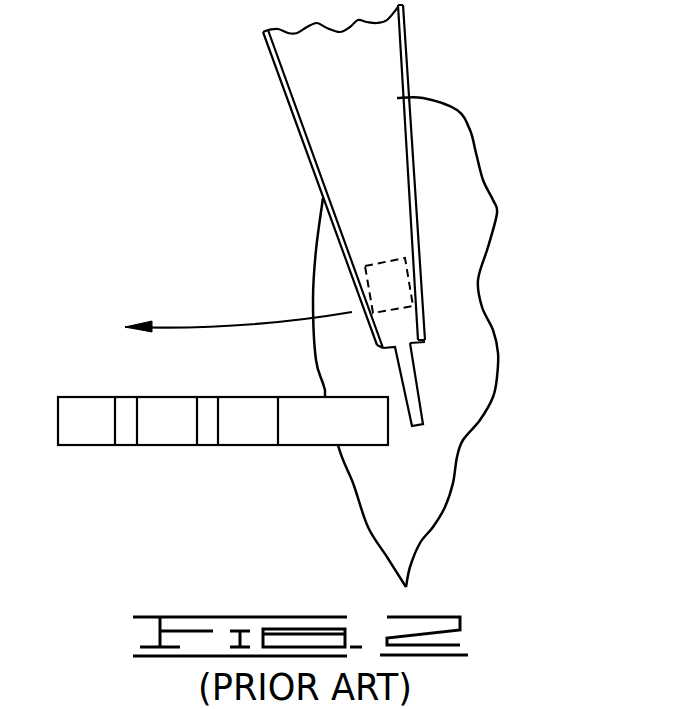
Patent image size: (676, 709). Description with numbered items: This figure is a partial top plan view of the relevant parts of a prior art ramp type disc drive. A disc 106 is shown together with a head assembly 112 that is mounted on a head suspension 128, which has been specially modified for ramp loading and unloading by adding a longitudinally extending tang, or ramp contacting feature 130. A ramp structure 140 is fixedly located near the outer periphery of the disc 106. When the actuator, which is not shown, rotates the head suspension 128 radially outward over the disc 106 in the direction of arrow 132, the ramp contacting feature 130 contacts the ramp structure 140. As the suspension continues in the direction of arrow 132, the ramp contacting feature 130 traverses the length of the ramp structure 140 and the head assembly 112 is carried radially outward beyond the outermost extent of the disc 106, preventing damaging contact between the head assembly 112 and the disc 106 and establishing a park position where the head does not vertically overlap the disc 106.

The head suspension 128 is at (375, 115).
The head assembly 112 is at (398, 271).
The ramp contacting feature 130 is at (412, 392).
The arrow 132 is at (228, 327).
The ramp structure 140 is at (88, 447).
The disc 106 is at (370, 527).